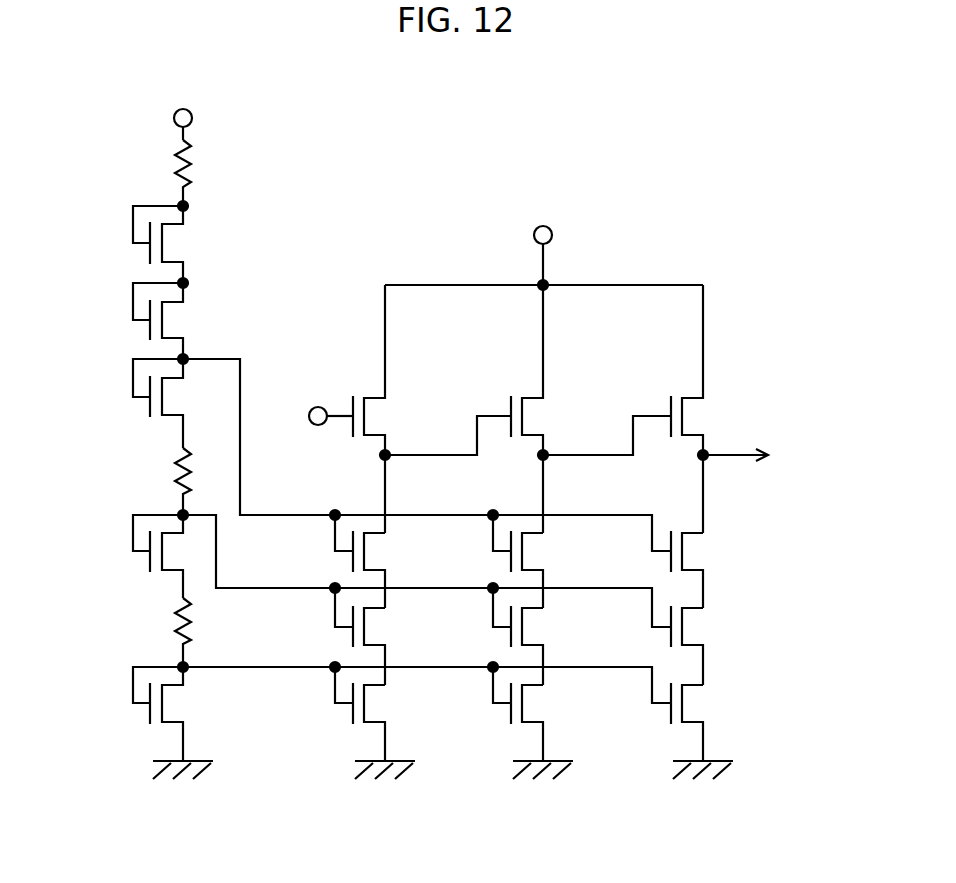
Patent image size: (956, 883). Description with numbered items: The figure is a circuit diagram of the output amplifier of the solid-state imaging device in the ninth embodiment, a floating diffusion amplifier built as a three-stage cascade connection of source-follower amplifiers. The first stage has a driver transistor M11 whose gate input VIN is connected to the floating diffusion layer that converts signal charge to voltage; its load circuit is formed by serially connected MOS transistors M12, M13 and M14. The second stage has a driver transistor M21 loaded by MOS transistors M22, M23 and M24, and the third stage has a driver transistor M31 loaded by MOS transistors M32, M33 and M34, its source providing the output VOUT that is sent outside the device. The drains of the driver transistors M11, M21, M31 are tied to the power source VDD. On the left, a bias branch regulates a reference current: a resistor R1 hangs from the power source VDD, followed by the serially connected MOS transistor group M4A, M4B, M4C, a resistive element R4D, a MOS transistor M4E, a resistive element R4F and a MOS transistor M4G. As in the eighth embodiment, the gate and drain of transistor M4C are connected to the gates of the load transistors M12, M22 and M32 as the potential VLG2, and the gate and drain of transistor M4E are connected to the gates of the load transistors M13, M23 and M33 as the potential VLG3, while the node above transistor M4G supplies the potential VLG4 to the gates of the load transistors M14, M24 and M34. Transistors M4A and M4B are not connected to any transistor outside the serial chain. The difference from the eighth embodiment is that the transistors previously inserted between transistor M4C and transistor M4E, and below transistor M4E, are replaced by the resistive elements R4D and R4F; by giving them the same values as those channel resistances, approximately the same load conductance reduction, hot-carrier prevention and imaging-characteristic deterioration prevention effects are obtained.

The power source VDD is at (438, 197).
The resistor R1 is at (160, 173).
The MOS transistor M4A is at (124, 242).
The MOS transistor M4B is at (124, 318).
The MOS transistor M4C is at (124, 401).
The resistive element R4D is at (145, 481).
The MOS transistor M4E is at (124, 554).
The resistive element R4F is at (150, 632).
The MOS transistor M4G is at (136, 720).
The potential VLG2 is at (427, 441).
The potential VLG3 is at (427, 571).
The potential VLG4 is at (427, 671).
The gate input VIN is at (325, 400).
The output VOUT is at (772, 457).
The first-stage driver transistor M11 is at (397, 409).
The MOS transistor M12 is at (397, 569).
The MOS transistor M13 is at (397, 645).
The MOS transistor M14 is at (397, 731).
The driver transistor M21 is at (493, 409).
The MOS transistor M22 is at (556, 569).
The MOS transistor M23 is at (556, 645).
The MOS transistor M24 is at (556, 731).
The driver transistor M31 is at (652, 409).
The MOS transistor M32 is at (716, 569).
The MOS transistor M33 is at (716, 645).
The MOS transistor M34 is at (716, 731).